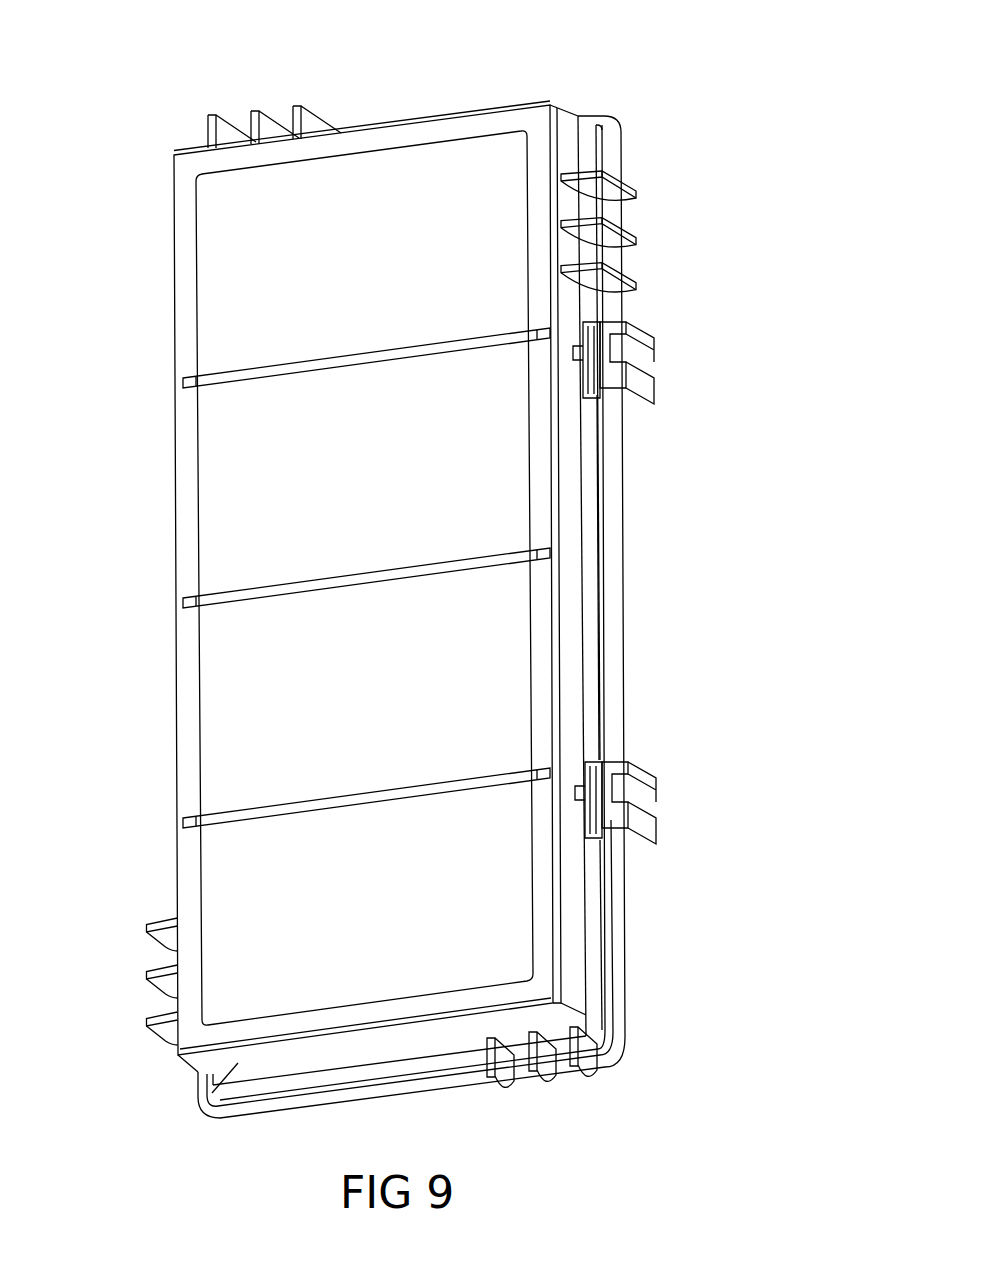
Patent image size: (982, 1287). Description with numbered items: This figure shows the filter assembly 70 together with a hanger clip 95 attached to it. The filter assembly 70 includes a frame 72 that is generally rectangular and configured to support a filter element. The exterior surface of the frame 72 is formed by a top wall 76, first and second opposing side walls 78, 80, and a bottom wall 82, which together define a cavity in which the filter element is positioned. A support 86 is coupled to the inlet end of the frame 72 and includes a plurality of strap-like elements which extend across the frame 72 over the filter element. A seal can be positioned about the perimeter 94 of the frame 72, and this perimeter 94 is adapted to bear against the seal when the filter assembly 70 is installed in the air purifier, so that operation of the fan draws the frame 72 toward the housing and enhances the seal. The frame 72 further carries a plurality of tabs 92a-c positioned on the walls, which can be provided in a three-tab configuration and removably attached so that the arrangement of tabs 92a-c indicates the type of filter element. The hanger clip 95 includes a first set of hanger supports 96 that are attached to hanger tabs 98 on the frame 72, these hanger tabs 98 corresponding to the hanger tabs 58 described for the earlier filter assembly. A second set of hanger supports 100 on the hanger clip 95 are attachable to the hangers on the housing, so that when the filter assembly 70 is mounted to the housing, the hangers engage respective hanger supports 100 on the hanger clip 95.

The filter assembly 70 is at (653, 107).
The frame 72 is at (577, 932).
The top wall 76 is at (203, 1107).
The first side wall 78 is at (587, 960).
The second side wall 80 is at (177, 757).
The bottom wall 82 is at (521, 106).
The support 86 is at (187, 703).
The tabs 92a-c is at (293, 95).
The perimeter 94 is at (630, 1033).
The hanger clip 95 is at (613, 572).
The hanger supports 96 is at (598, 325).
The hanger tabs 98 is at (602, 837).
The hanger tabs 58 is at (600, 410).
The hanger supports 100 is at (642, 363).